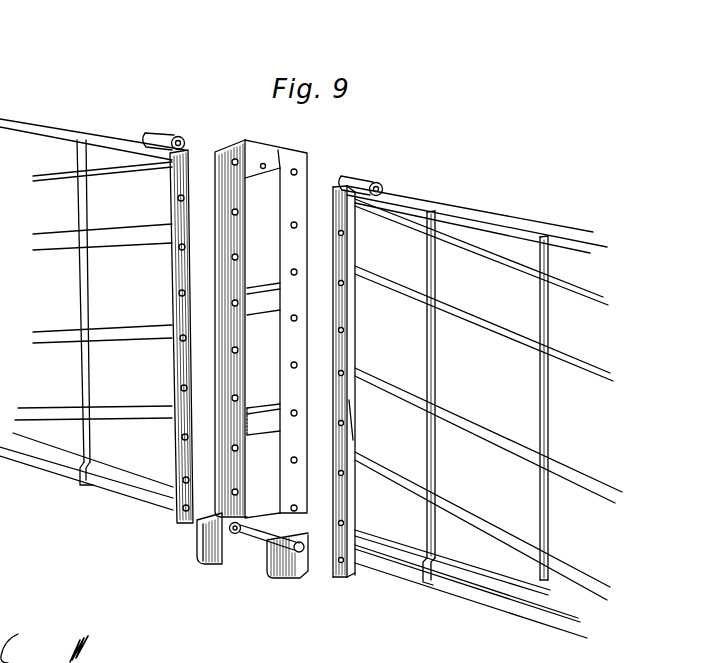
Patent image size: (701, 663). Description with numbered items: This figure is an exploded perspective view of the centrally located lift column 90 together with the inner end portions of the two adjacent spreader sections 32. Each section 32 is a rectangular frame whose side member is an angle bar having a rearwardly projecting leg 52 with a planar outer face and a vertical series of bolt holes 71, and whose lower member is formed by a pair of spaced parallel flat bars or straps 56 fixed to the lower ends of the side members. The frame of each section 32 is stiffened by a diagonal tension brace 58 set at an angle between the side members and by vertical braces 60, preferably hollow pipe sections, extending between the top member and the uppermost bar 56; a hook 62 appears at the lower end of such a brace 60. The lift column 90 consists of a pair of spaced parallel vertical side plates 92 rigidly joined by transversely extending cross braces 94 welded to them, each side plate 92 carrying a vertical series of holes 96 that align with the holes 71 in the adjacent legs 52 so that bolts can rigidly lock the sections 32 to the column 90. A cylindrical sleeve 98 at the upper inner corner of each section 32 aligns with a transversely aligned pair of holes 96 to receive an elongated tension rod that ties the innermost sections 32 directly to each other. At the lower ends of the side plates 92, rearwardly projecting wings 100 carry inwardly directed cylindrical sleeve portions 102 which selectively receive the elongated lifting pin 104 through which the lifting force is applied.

The section 32 is at (477, 395).
The leg of side member 52 is at (341, 356).
The flat bars 56 is at (483, 578).
The diagonal brace 58 is at (480, 432).
The vertical brace 60 is at (432, 373).
The hook at post bottom 62 is at (424, 563).
The bolt hole 71 is at (348, 424).
The lift column 90 is at (281, 323).
The side plate 92 is at (288, 393).
The cross brace 94 is at (258, 298).
The hole in side plate 96 is at (294, 364).
The cylindrical sleeve 98 is at (364, 183).
The wing 100 is at (203, 550).
The cylindrical sleeve portion 102 is at (229, 534).
The lifting pin 104 is at (288, 553).